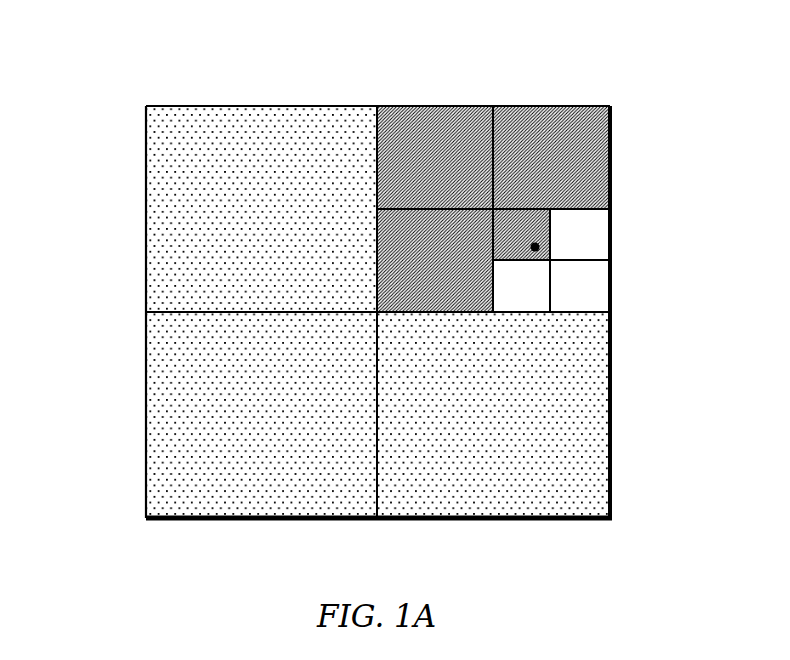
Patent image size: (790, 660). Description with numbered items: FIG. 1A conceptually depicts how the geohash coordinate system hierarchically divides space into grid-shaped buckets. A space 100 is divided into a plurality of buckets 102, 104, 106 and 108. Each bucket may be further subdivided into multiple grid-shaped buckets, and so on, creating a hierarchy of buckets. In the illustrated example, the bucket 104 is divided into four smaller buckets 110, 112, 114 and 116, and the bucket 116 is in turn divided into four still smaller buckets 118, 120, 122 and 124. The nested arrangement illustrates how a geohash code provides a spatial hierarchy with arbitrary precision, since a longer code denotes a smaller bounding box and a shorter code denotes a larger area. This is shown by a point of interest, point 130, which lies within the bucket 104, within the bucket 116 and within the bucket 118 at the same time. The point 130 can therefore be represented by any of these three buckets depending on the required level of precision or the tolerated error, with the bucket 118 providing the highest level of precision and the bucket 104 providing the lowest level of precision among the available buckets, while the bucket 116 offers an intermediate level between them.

The space 100 is at (121, 67).
The bucket 102 is at (281, 226).
The bucket 104 is at (478, 105).
The bucket 106 is at (281, 427).
The bucket 108 is at (515, 427).
The bucket 110 is at (453, 170).
The bucket 112 is at (568, 170).
The bucket 114 is at (454, 273).
The bucket 116 is at (573, 207).
The bucket 118 is at (507, 247).
The bucket 120 is at (583, 238).
The bucket 122 is at (523, 293).
The bucket 124 is at (587, 287).
The point 130 is at (533, 247).